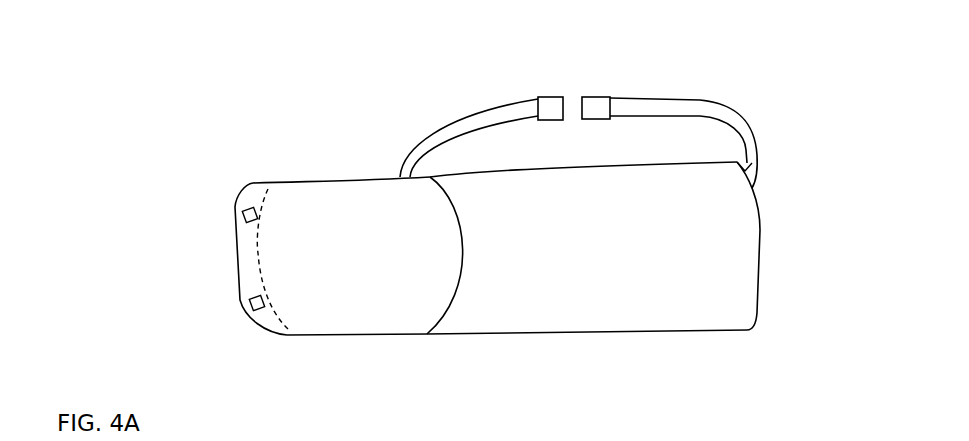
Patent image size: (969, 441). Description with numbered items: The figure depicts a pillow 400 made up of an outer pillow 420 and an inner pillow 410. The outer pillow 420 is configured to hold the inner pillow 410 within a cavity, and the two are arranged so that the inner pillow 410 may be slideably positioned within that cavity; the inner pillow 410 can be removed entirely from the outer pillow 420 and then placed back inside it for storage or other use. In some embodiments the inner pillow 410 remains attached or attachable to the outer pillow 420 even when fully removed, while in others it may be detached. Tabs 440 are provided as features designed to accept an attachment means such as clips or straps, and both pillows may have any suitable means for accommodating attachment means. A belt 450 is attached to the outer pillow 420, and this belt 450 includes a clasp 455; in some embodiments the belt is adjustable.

The pillow 400 is at (432, 219).
The inner pillow 410 is at (350, 315).
The outer pillow 420 is at (610, 312).
The tabs 440 is at (240, 210).
The belt 450 is at (578, 109).
The clasp 455 is at (543, 107).